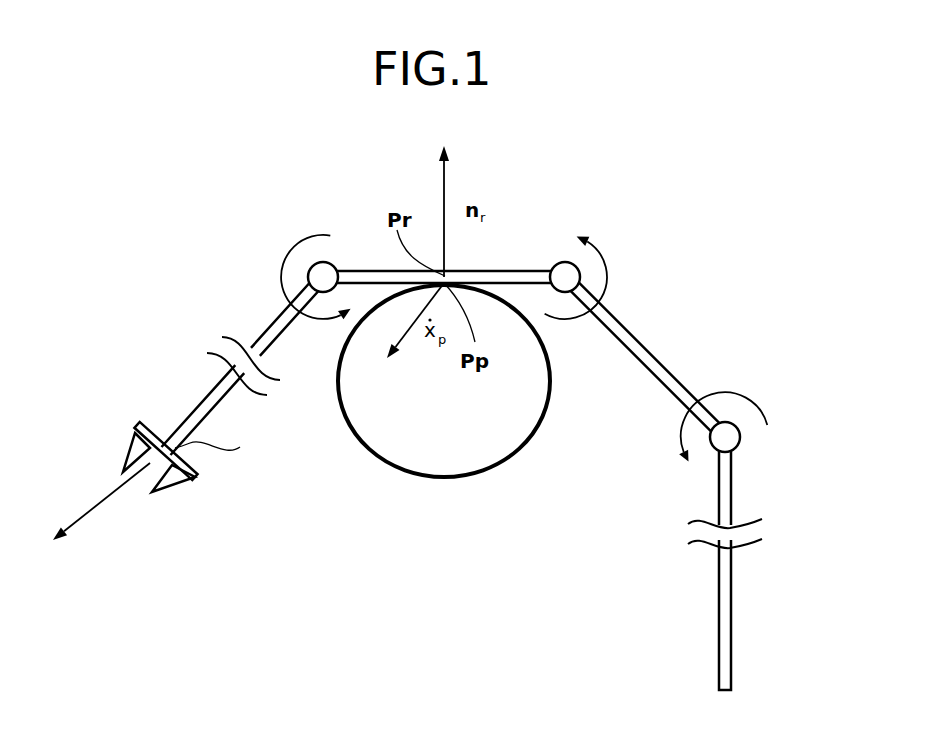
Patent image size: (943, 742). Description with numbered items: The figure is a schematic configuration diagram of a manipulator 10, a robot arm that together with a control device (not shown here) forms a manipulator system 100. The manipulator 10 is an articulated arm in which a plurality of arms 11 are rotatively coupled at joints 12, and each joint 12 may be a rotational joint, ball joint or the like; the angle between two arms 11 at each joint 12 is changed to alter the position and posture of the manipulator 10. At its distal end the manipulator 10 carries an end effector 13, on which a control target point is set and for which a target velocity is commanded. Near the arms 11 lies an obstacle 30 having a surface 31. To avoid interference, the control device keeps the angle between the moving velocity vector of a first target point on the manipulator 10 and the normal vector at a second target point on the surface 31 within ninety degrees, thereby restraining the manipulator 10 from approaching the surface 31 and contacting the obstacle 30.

The manipulator 10 is at (643, 218).
The manipulator system 100 is at (436, 421).
The arm 11 is at (497, 270).
The joint 12 is at (338, 262).
The end effector 13 is at (137, 445).
The obstacle 30 is at (442, 481).
The surface 31 is at (372, 302).